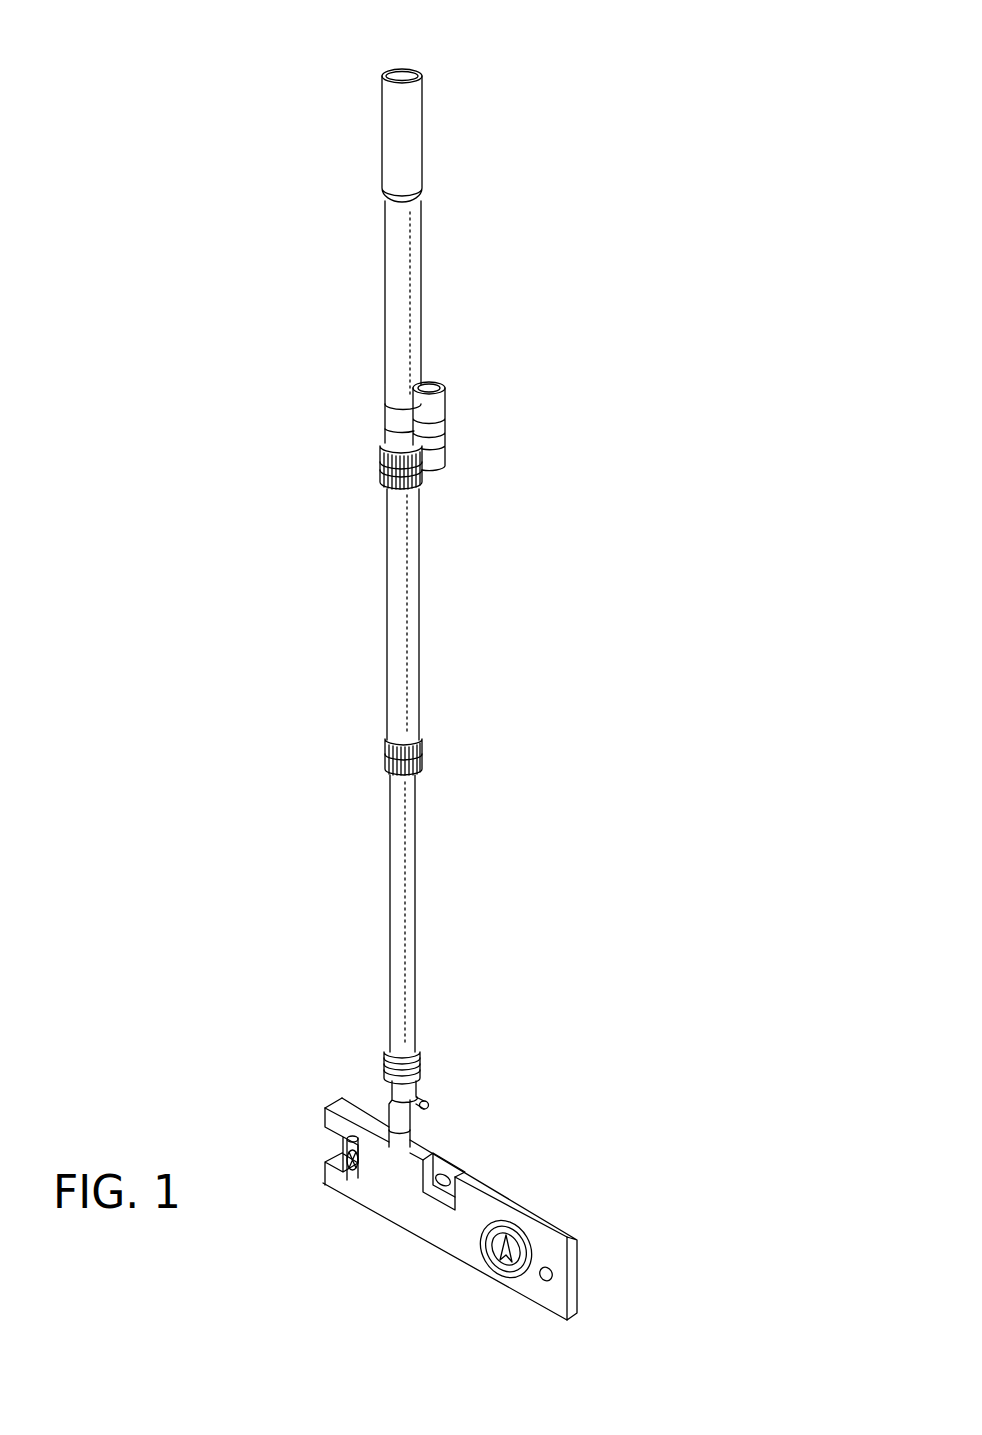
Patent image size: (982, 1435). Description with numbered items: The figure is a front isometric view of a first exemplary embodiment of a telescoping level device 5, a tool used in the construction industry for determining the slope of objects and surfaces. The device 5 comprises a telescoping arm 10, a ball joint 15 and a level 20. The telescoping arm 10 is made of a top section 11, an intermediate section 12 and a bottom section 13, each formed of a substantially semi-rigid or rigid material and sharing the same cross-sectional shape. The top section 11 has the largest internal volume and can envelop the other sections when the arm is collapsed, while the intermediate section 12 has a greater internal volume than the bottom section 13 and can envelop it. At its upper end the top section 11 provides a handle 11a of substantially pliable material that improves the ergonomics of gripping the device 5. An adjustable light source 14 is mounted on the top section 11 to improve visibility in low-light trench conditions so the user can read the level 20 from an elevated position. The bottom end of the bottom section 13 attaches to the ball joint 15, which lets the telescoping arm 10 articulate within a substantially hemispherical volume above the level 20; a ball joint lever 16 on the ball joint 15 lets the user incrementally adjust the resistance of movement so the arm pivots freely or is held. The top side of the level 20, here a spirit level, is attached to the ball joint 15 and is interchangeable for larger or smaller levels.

The telescoping level device 5 is at (206, 45).
The telescoping arm 10 is at (378, 1060).
The top section 11 is at (410, 306).
The handle 11a is at (410, 136).
The intermediate section 12 is at (402, 612).
The bottom section 13 is at (400, 950).
The adjustable light source 14 is at (432, 414).
The ball joint 15 is at (380, 1100).
The ball joint lever 16 is at (427, 1106).
The level 20 is at (510, 1203).